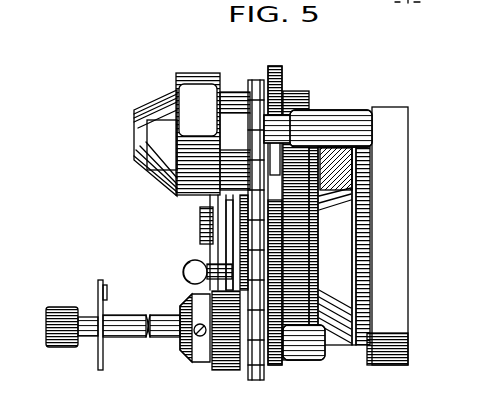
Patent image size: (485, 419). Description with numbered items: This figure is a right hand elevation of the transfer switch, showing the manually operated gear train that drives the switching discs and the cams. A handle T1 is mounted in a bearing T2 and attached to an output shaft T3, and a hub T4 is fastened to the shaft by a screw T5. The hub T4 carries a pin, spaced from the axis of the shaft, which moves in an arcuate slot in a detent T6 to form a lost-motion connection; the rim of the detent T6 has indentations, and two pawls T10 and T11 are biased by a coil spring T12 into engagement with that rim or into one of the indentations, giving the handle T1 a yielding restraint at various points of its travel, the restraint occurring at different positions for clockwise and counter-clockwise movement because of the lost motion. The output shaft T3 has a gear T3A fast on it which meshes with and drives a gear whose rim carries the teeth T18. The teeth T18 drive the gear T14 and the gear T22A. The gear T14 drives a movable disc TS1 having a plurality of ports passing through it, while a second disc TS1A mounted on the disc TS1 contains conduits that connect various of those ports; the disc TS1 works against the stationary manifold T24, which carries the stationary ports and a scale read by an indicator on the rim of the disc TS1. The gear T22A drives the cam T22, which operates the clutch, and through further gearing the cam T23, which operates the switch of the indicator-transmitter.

The handle T1 is at (60, 317).
The bearing T2 is at (100, 280).
The output shaft T3 is at (133, 318).
The gear T3A is at (273, 365).
The hub T4 is at (192, 305).
The screw T5 is at (183, 330).
The detent T6 is at (228, 368).
The pawl T10 is at (218, 211).
The pawl T11 is at (230, 222).
The coil spring T12 is at (188, 263).
The gear T14 is at (310, 220).
The gear teeth T18 is at (293, 162).
The cam T22 is at (203, 88).
The gear T22A is at (277, 73).
The cam T23 is at (135, 137).
The stationary manifold T24 is at (258, 80).
The movable disc TS1 is at (365, 217).
The second disc TS1A is at (340, 237).